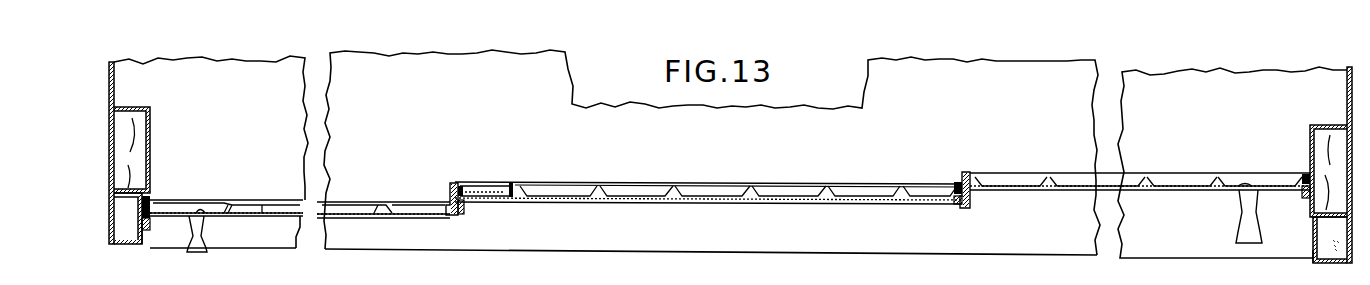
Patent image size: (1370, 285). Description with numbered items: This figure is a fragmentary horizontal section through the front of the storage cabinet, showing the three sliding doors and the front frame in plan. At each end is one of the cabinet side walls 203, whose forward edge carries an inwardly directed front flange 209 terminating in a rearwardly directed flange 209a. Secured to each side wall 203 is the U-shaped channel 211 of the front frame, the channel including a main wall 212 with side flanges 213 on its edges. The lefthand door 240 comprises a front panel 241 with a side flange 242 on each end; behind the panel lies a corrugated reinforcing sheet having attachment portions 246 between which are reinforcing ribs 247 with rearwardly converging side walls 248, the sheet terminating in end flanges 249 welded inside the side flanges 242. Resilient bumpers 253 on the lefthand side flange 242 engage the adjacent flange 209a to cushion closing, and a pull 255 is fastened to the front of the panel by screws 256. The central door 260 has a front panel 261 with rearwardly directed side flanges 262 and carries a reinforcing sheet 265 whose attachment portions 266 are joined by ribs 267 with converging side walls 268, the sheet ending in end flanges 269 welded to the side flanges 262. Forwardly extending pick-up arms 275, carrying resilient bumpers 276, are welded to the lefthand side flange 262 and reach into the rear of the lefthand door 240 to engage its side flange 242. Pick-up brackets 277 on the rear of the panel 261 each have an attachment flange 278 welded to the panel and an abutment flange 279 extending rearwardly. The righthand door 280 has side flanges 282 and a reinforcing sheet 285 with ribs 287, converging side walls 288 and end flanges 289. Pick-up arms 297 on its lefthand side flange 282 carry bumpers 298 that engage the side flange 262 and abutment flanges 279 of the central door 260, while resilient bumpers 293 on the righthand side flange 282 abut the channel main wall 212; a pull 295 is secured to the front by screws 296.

The side walls 203 is at (113, 70).
The U-shaped channel 211 is at (156, 106).
The main wall 212 is at (151, 126).
The side flanges 213 is at (127, 153).
The front flanges 209 is at (124, 245).
The rearwardly directed flanges 209a is at (144, 245).
The side flange 242 is at (150, 196).
The resilient bumpers 253 is at (150, 221).
The lefthand door 240 is at (361, 226).
The front panel 241 is at (394, 220).
The attachment portions 246 is at (264, 204).
The reinforcing ribs 247 is at (224, 203).
The side walls 248 is at (224, 215).
The pull 255 is at (206, 252).
The screws 256 is at (200, 211).
The end flanges 249 is at (462, 216).
The pick-up arms 275 is at (450, 195).
The resilient bumpers 276 is at (446, 203).
The pick-up brackets 277 is at (498, 186).
The attachment flange 278 is at (478, 190).
The abutment flange 279 is at (515, 182).
The end flanges 269 is at (460, 186).
The central door 260 is at (832, 210).
The front panel 261 is at (617, 205).
The reinforcing sheet 265 is at (752, 180).
The attachment portions 266 is at (716, 205).
The ribs 267 is at (628, 188).
The side walls 268 is at (745, 193).
The side flanges 262 is at (972, 208).
The end flanges 289 is at (966, 176).
The pick-up arms 297 is at (956, 186).
The bumpers 298 is at (955, 200).
The righthand door 280 is at (1184, 202).
The reinforcing sheet 285 is at (1069, 176).
The ribs 287 is at (1222, 177).
The side walls 288 is at (1215, 184).
The side flanges 282 is at (1304, 176).
The resilient bumpers 293 is at (1305, 199).
The pull 295 is at (1240, 238).
The screws 296 is at (1245, 184).